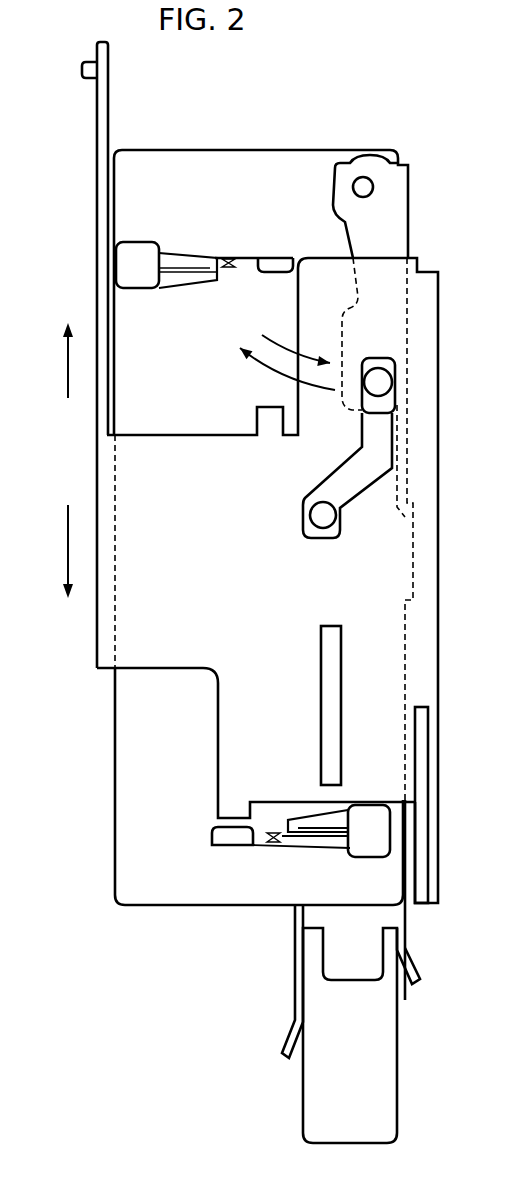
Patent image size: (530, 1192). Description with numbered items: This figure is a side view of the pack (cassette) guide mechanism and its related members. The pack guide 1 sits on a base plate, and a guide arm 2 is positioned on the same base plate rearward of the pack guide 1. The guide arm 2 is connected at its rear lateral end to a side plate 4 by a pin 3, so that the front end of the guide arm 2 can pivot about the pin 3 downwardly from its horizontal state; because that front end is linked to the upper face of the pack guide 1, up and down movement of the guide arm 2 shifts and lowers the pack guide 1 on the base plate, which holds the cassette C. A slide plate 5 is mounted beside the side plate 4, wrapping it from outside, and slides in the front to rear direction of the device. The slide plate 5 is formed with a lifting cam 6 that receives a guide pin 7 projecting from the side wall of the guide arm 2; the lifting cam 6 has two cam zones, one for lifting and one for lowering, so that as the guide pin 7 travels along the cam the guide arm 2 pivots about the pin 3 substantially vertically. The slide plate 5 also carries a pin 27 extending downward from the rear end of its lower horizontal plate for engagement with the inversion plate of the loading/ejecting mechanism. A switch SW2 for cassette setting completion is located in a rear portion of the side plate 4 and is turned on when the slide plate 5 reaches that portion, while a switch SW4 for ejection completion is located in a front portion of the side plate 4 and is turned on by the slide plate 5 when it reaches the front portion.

The pin 27 is at (85, 61).
The slide plate 5 is at (100, 203).
The side plate 4 is at (127, 850).
The guide arm 2 is at (398, 203).
The pin 3 is at (365, 178).
The switch for cassette setting completion SW2 is at (277, 258).
The guide pin 7 is at (380, 382).
The lifting cam 6 is at (362, 487).
The switch for ejection completion SW4 is at (238, 846).
The pack guide 1 is at (295, 988).
The cassette C is at (305, 1097).